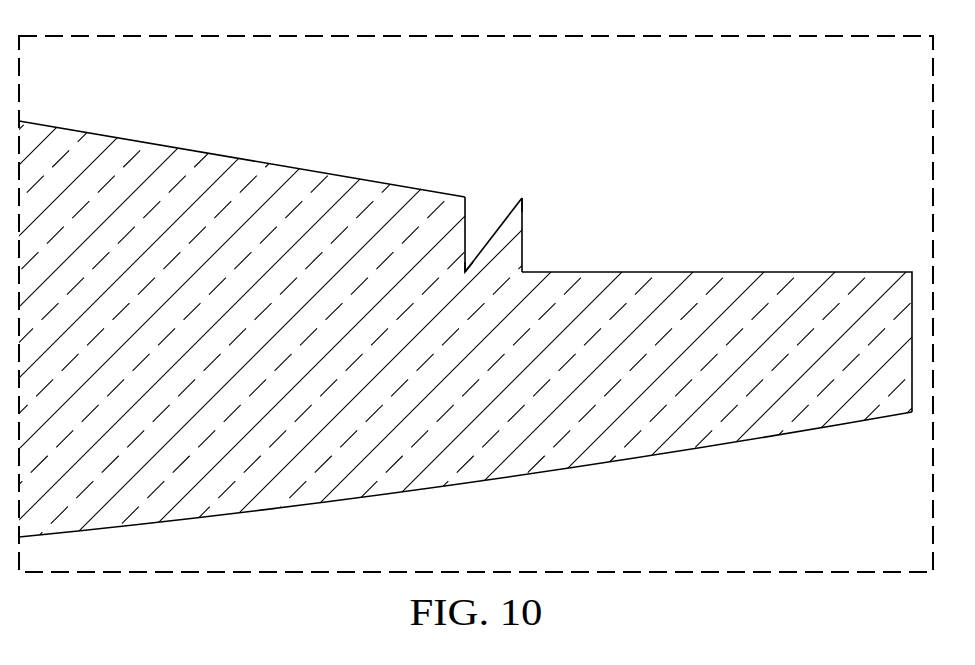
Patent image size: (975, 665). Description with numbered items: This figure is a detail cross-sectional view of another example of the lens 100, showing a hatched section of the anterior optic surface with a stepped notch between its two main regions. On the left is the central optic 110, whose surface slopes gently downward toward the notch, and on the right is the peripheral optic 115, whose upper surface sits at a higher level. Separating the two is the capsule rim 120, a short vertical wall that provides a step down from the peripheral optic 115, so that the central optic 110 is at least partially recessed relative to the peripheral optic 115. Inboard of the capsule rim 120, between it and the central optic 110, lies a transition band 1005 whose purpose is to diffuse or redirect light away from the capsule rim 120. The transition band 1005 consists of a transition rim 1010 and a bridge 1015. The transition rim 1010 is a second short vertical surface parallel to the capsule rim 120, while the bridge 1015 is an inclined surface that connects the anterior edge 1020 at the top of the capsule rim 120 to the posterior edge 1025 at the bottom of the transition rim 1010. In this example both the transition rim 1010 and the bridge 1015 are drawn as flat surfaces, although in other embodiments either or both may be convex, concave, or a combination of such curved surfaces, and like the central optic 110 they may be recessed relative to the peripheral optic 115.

The lens 100 is at (487, 325).
The central optic 110 is at (231, 152).
The peripheral optic 115 is at (746, 270).
The capsule rim 120 is at (524, 258).
The transition band 1005 is at (477, 180).
The transition rim 1010 is at (475, 203).
The bridge 1015 is at (502, 214).
The anterior edge 1020 is at (522, 198).
The posterior edge 1025 is at (463, 276).